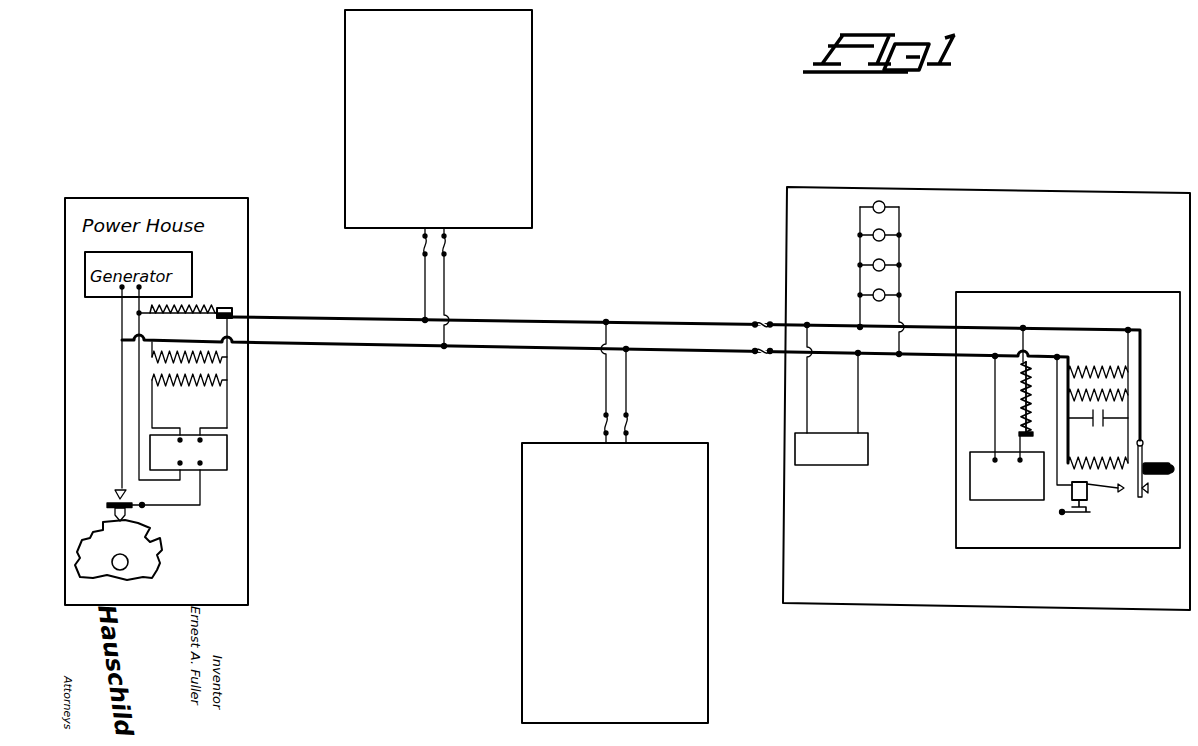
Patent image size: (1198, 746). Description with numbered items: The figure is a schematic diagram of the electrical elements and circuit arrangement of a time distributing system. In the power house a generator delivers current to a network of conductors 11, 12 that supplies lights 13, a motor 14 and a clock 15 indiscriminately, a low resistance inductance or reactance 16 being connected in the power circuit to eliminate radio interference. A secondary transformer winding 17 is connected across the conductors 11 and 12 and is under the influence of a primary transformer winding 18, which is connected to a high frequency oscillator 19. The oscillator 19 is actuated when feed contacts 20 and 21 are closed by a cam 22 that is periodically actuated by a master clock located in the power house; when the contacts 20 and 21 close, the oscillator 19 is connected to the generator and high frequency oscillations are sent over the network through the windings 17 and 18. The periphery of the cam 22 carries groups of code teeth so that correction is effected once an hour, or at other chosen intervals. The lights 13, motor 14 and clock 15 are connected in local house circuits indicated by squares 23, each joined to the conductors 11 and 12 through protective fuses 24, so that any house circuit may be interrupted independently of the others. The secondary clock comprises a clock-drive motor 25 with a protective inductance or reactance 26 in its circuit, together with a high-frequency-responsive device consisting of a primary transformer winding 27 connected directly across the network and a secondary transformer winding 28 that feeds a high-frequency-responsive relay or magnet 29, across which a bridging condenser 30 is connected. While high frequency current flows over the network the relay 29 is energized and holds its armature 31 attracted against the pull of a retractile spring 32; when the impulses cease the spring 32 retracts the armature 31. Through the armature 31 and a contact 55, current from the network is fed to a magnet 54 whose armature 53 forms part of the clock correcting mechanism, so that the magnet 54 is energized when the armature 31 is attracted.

The network conductor 11 is at (297, 316).
The network conductor 12 is at (318, 345).
The lights 13 is at (866, 293).
The motor 14 is at (798, 451).
The clock 15 is at (1005, 305).
The reactance 16 is at (222, 306).
The secondary transformer winding 17 is at (222, 357).
The primary transformer winding 18 is at (225, 380).
The high frequency oscillator 19 is at (222, 450).
The feed contact 20 is at (114, 504).
The feed contact 21 is at (117, 491).
The cam 22 is at (142, 560).
The house circuit 23 is at (507, 88).
The protective fuses 24 is at (446, 250).
The clock-drive motor 25 is at (1023, 488).
The protective reactance 26 is at (1021, 372).
The primary transformer winding 27 is at (1108, 368).
The secondary transformer winding 28 is at (1120, 392).
The high-frequency-responsive relay 29 is at (1108, 455).
The bridging condenser 30 is at (1098, 430).
The armature 31 is at (1145, 452).
The retractile spring 32 is at (1168, 476).
The armature 53 is at (1079, 513).
The magnet 54 is at (1090, 490).
The contact 55 is at (1146, 486).